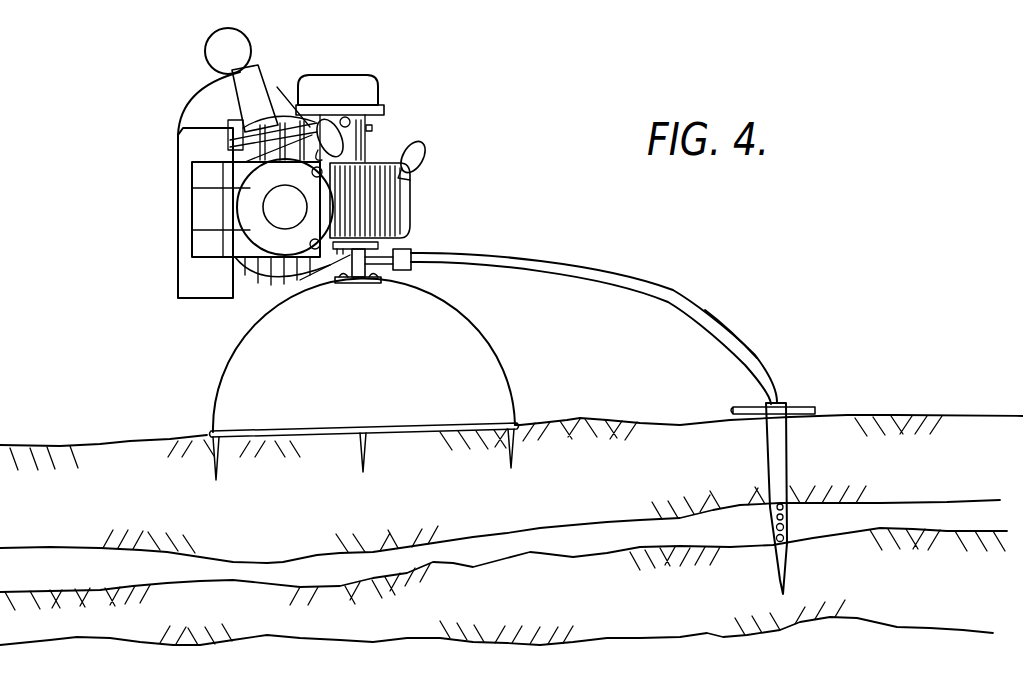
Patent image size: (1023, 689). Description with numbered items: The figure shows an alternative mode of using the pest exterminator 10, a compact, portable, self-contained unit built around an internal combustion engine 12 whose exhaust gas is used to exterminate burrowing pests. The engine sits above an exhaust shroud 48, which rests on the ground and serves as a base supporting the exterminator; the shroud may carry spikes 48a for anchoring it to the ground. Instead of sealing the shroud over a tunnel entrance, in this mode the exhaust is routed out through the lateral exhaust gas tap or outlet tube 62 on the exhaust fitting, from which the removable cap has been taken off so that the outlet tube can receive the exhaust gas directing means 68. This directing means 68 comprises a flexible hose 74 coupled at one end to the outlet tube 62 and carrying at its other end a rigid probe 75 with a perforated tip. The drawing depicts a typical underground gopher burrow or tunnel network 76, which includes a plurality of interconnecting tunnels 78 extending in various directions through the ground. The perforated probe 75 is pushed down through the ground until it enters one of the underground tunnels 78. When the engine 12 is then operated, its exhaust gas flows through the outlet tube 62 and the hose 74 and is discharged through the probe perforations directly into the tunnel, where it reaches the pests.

The pest exterminator 10 is at (155, 210).
The internal combustion engine 12 is at (384, 106).
The exhaust shroud 48 is at (492, 351).
The spikes 48a is at (213, 471).
The outlet tube 62 is at (392, 269).
The exhaust gas directing means 68 is at (676, 291).
The flexible hose 74 is at (711, 328).
The rigid probe 75 is at (781, 475).
The gopher burrow or tunnel network 76 is at (637, 518).
The tunnels 78 is at (668, 546).